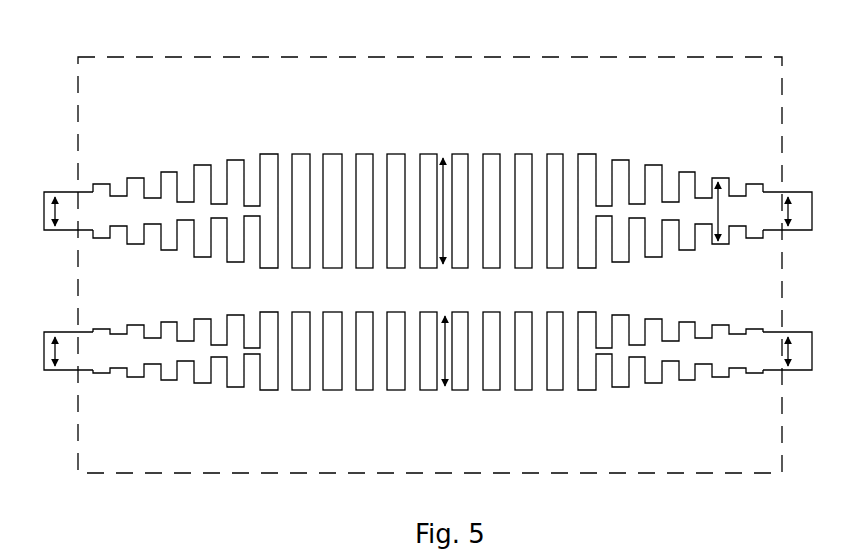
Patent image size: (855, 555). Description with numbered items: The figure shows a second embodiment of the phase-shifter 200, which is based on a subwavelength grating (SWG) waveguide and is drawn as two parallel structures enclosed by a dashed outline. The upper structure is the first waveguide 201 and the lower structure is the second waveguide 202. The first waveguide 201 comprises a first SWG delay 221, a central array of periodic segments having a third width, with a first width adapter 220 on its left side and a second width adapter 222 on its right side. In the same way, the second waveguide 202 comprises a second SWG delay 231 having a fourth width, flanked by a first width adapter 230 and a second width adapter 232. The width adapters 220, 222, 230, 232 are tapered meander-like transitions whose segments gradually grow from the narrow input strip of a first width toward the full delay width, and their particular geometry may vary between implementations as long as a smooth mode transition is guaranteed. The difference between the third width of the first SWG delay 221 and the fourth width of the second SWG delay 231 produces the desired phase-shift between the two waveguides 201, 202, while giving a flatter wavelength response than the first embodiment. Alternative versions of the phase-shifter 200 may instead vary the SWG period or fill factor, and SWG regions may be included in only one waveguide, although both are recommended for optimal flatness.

The phase-shifter 200 is at (495, 56).
The first waveguide 201 is at (73, 193).
The second waveguide 202 is at (73, 333).
The first width adapter 220 is at (203, 165).
The first SWG delay 221 is at (398, 154).
The second width adapter 222 is at (653, 165).
The first width adapter 230 is at (206, 320).
The second SWG delay 231 is at (398, 312).
The second width adapter 232 is at (655, 318).